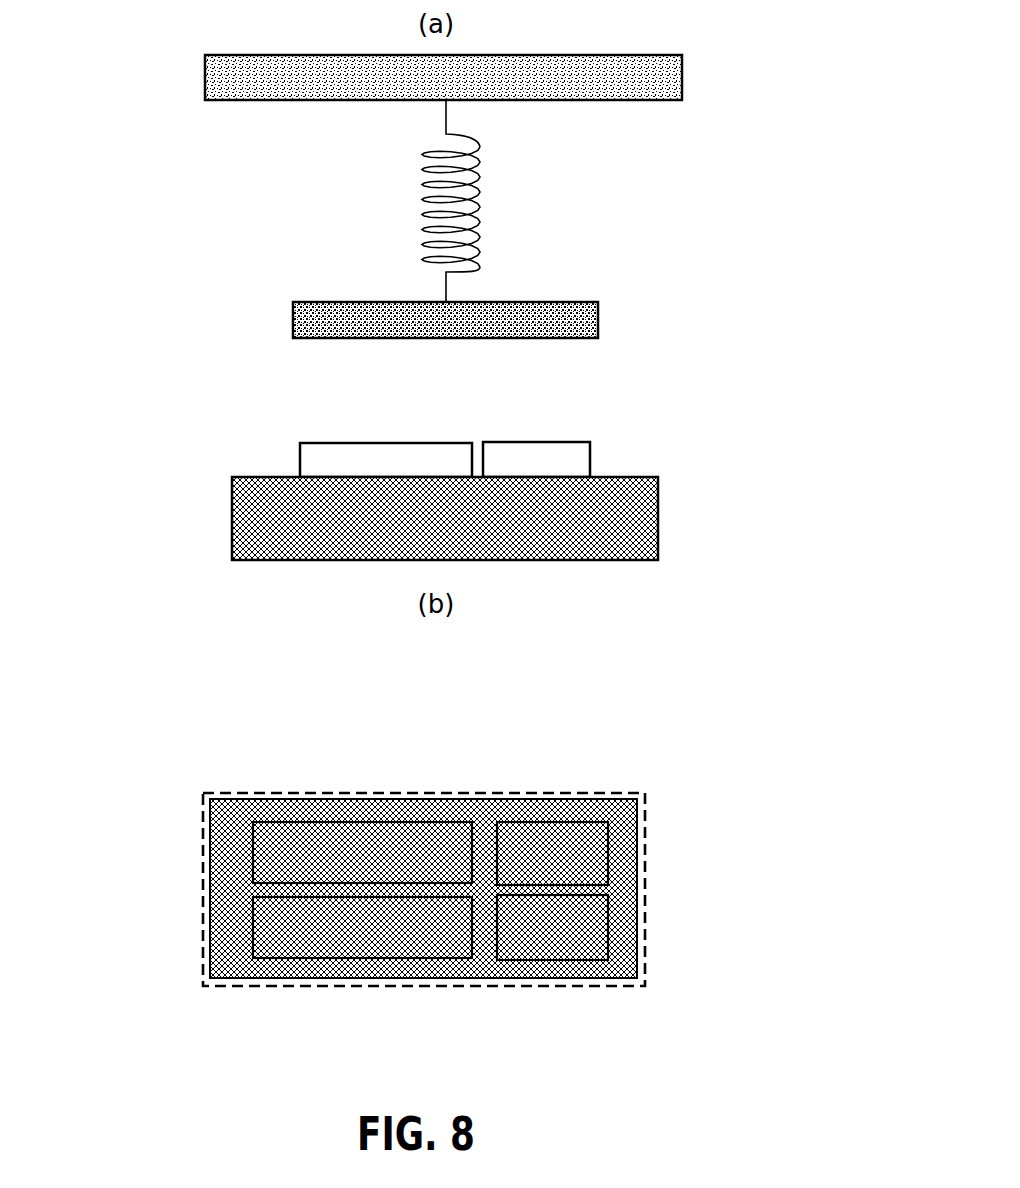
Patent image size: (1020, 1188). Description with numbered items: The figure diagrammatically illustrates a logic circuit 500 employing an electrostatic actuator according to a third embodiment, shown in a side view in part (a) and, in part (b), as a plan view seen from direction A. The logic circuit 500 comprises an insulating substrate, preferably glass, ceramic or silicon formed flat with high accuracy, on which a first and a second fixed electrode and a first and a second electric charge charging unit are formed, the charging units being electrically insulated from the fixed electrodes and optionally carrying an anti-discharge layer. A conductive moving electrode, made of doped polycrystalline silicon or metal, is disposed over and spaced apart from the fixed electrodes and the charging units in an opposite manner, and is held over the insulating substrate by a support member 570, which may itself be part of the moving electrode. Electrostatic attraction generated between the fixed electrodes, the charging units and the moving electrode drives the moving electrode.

The logic circuit 500 is at (88, 89).
The support member 570 is at (470, 201).